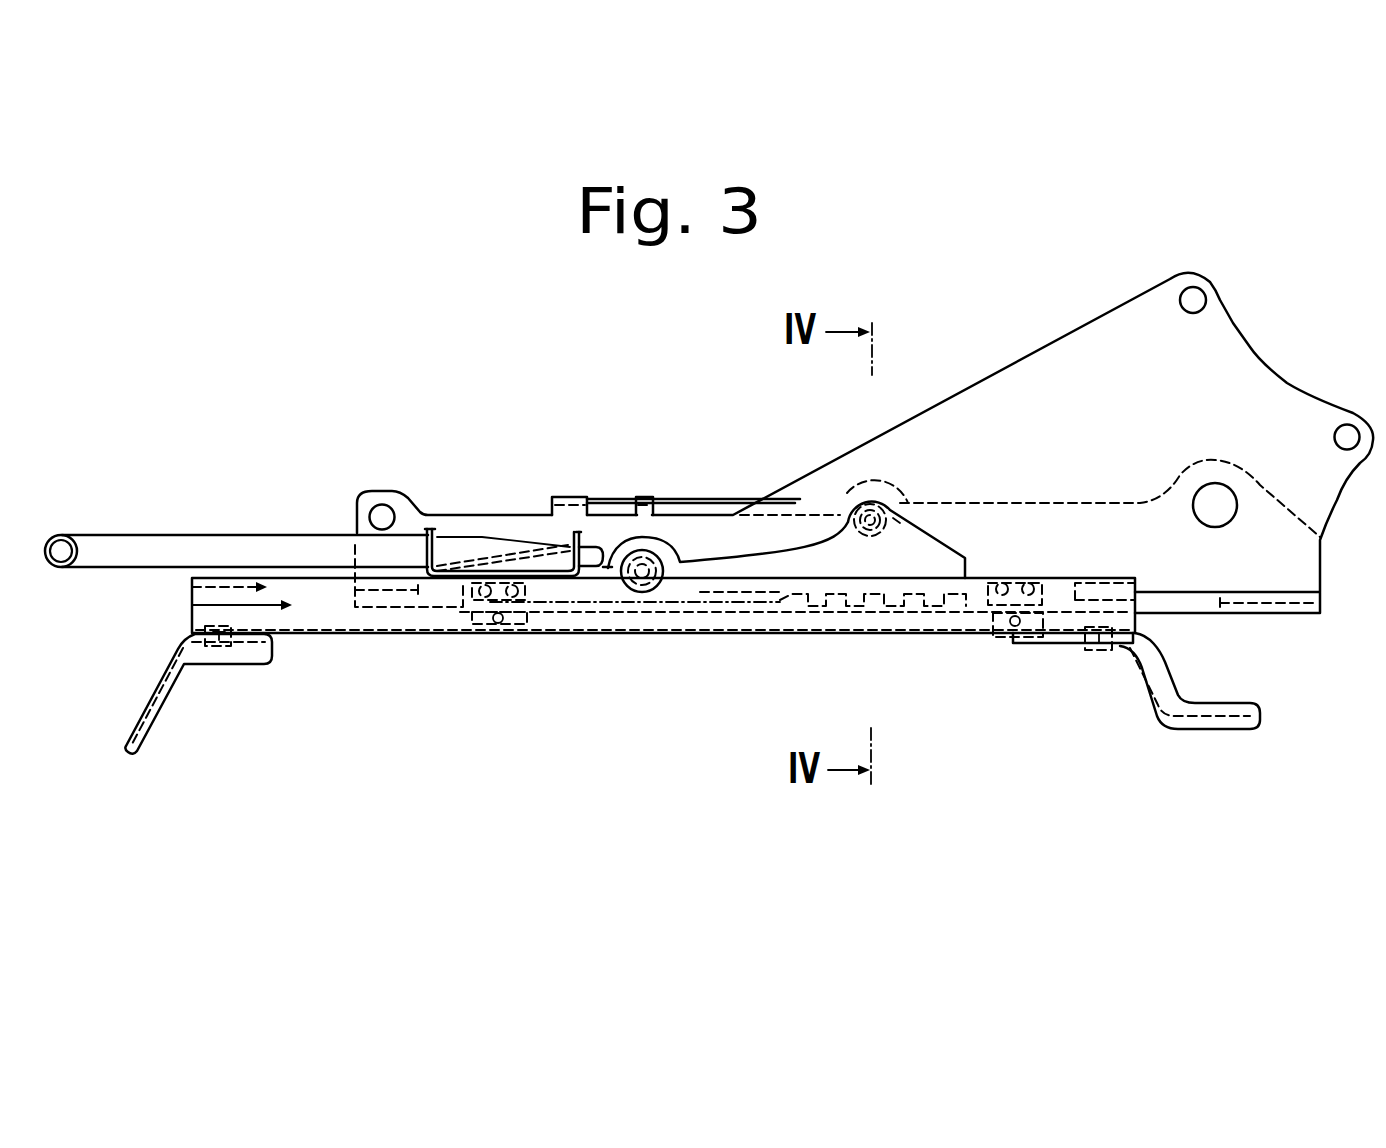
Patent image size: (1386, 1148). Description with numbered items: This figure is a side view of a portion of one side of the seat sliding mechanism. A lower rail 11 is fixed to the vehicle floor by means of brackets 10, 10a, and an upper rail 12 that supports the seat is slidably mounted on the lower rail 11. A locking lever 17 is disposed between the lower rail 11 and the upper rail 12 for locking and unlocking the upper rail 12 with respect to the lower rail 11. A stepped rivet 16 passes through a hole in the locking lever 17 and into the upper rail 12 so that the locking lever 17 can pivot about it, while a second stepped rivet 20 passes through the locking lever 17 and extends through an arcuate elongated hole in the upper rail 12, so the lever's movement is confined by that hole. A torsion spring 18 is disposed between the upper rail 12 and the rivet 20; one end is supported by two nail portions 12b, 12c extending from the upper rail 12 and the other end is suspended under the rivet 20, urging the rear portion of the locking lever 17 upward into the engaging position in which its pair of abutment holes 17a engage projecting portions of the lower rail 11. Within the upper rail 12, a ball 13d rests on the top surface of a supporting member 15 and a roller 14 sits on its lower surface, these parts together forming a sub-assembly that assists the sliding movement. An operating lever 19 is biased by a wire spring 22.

The bracket 10 is at (160, 710).
The bracket 10a is at (1157, 687).
The lower rail 11 is at (331, 636).
The upper rail 12 is at (1237, 320).
The nail portion 12b is at (572, 495).
The nail portion 12c is at (645, 496).
The ball 13d is at (518, 596).
The roller 14 is at (497, 625).
The supporting member 15 is at (474, 607).
The stepped rivet 16 is at (645, 598).
The locking lever 17 is at (855, 552).
The abutment holes 17a is at (940, 600).
The torsion spring 18 is at (712, 505).
The operating lever 19 is at (222, 548).
The stepped rivet 20 is at (865, 510).
The wire spring 22 is at (447, 532).